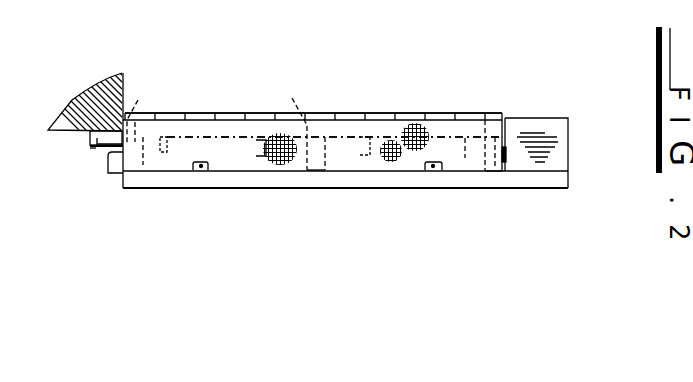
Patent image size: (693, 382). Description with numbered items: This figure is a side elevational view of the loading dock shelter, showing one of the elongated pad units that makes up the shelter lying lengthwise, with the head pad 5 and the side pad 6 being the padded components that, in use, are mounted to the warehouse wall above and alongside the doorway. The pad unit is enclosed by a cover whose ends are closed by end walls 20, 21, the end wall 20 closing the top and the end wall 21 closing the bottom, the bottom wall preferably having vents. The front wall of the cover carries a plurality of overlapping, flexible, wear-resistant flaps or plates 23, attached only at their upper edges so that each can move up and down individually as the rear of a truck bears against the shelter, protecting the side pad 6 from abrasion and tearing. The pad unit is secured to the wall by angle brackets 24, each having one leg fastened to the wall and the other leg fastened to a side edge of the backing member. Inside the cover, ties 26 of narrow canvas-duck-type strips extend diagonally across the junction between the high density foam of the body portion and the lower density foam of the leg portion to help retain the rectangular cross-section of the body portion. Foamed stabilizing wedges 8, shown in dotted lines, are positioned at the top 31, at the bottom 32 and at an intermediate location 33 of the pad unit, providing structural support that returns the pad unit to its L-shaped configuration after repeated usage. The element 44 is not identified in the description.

The head pad 5 is at (508, 163).
The side pad 6 is at (348, 143).
The stabilizing wedges 8 is at (485, 116).
The end wall 20 is at (515, 172).
The end wall 21 is at (117, 175).
The flaps or plates 23 is at (264, 113).
The angle brackets 24 is at (208, 170).
The ties 26 is at (253, 162).
The top of the pad unit 31 is at (488, 171).
The bottom of the pad unit 32 is at (150, 142).
The intermediate position 33 is at (327, 170).
The wall member 44 is at (90, 148).